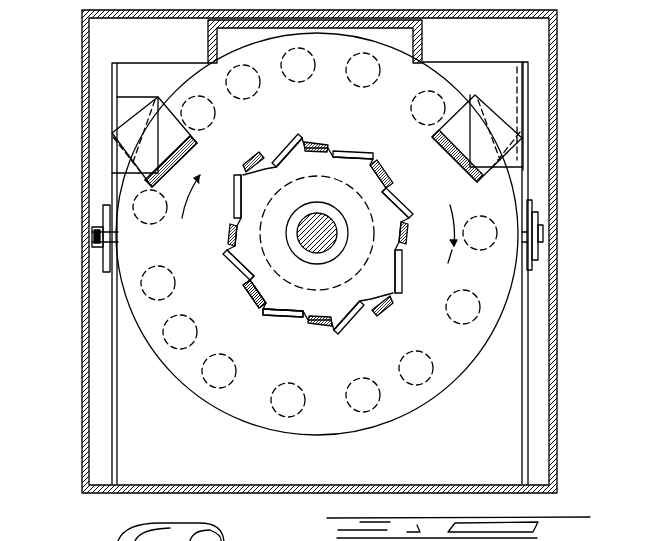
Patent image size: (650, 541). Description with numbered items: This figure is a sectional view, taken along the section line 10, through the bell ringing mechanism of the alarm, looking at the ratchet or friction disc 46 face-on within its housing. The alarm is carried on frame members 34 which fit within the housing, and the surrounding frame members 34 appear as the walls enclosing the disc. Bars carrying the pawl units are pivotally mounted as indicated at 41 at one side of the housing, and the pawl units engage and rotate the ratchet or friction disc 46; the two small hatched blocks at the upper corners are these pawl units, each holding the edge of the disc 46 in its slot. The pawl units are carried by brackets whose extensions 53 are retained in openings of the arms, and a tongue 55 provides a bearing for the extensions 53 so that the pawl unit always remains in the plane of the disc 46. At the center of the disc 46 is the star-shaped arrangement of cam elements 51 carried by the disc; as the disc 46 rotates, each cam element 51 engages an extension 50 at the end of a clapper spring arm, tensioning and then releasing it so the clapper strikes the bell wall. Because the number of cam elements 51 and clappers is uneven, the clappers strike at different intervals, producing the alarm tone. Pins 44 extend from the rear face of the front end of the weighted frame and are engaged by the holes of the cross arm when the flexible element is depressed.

The section line 10 is at (538, 527).
The frame member 34 is at (118, 453).
The pivot mounting 41 is at (100, 240).
The pins 44 is at (557, 357).
The ratchet or friction disc 46 is at (418, 407).
The extension of spring arm 50 is at (322, 139).
The cam element 51 is at (287, 144).
The extension of bracket 53 is at (98, 260).
The tongue 55 is at (100, 222).